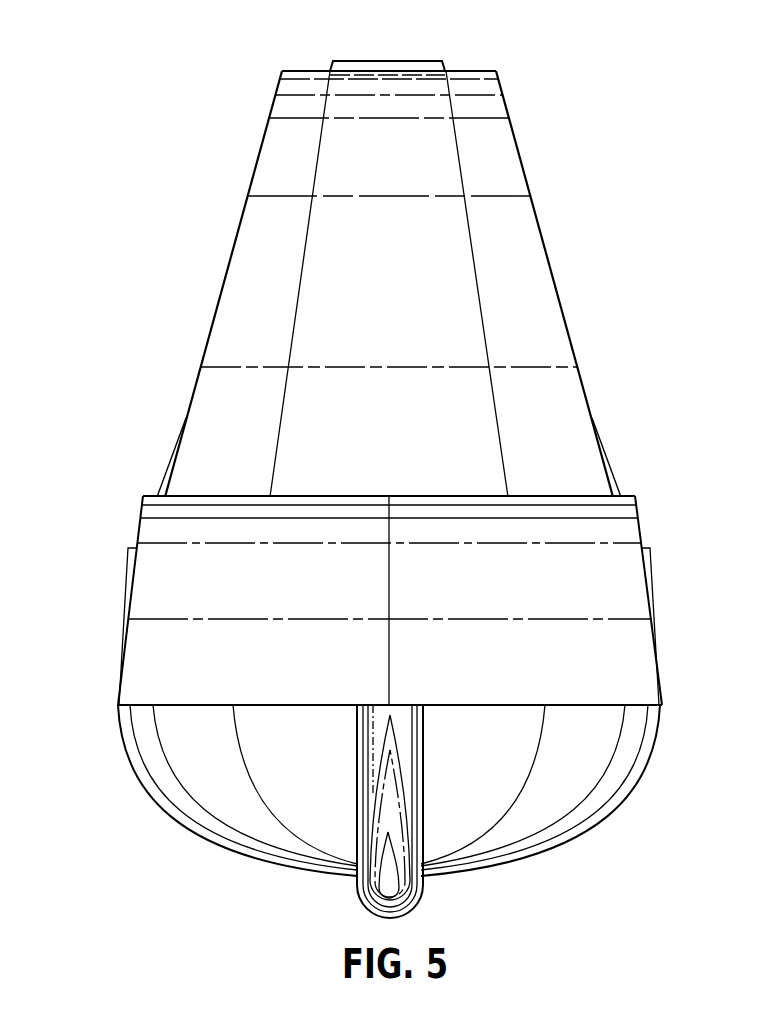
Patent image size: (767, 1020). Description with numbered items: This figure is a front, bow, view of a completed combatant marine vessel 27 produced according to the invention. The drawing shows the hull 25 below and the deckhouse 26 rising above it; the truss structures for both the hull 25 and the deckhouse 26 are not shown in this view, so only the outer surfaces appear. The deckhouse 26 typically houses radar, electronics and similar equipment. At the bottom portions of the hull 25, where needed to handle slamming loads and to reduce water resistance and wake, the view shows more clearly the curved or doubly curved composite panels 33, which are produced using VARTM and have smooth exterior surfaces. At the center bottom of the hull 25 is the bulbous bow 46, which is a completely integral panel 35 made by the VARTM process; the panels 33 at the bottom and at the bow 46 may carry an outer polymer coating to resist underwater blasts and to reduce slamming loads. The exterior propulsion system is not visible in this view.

The hull 25 is at (135, 480).
The deckhouse 26 is at (199, 339).
The combatant marine vessel 27 is at (624, 160).
The composite panels 33 is at (191, 805).
The integral panel 35 is at (520, 328).
The bulbous bow 46 is at (388, 832).